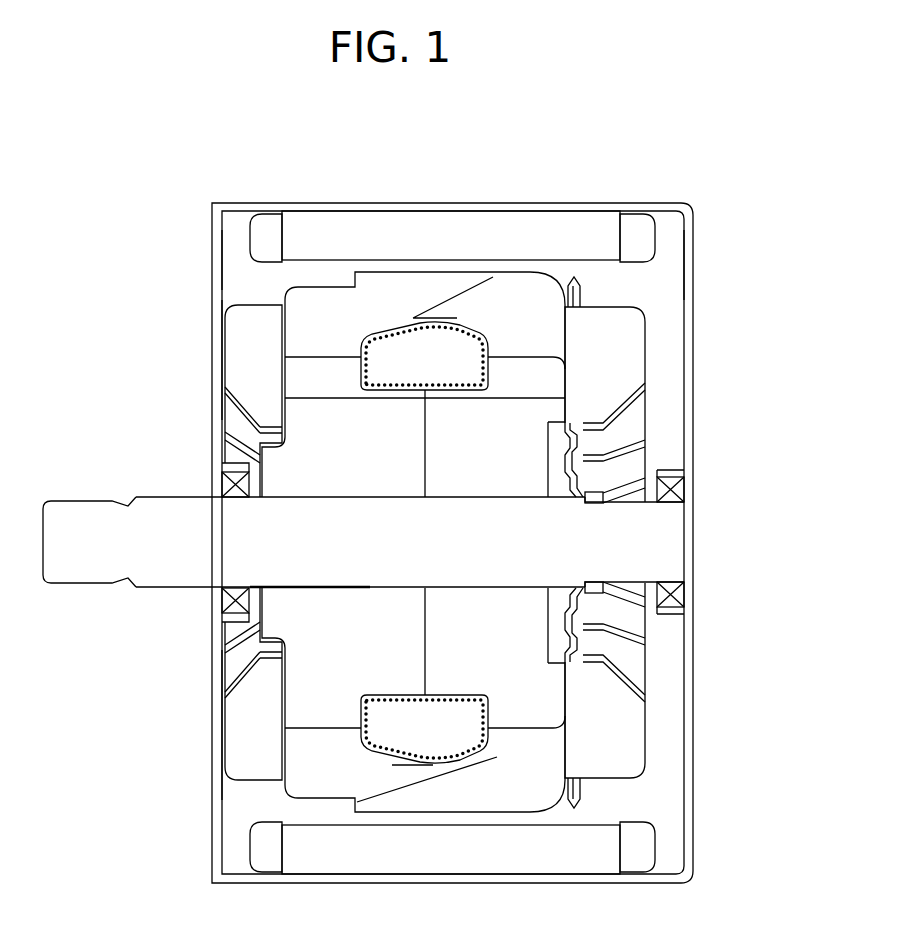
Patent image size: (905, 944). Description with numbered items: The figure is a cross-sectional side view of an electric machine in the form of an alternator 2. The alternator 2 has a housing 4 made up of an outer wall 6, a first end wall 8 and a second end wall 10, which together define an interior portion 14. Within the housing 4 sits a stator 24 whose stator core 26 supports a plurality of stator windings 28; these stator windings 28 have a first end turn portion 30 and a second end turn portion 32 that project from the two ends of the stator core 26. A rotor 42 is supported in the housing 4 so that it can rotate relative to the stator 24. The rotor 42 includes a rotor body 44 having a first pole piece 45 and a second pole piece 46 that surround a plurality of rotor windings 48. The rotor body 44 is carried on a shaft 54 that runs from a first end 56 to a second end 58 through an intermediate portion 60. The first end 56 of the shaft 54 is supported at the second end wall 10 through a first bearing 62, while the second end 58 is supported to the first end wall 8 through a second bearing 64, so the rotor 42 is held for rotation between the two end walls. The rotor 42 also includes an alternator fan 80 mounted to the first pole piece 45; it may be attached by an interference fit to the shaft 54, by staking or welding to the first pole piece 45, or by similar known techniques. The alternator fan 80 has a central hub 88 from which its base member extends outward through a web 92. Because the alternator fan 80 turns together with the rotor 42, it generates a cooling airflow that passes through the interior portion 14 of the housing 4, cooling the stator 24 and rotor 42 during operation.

The alternator 2 is at (122, 182).
The housing 4 is at (236, 185).
The outer wall 6 is at (632, 200).
The first end wall 8 is at (693, 380).
The second end wall 10 is at (215, 357).
The interior portion 14 is at (676, 258).
The stator 24 is at (618, 290).
The stator core 26 is at (412, 247).
The stator windings 28 is at (222, 263).
The first end turn portion 30 is at (262, 228).
The second end turn portion 32 is at (640, 232).
The rotor 42 is at (622, 800).
The rotor body 44 is at (548, 722).
The first pole piece 45 is at (305, 655).
The second pole piece 46 is at (513, 637).
The rotor windings 48 is at (445, 742).
The shaft 54 is at (330, 549).
The first end 56 is at (75, 510).
The second end 58 is at (668, 543).
The intermediate portion 60 is at (303, 568).
The first bearing 62 is at (232, 483).
The second bearing 64 is at (682, 485).
The alternator fan 80 is at (196, 739).
The central hub 88 is at (285, 440).
The web 92 is at (268, 750).